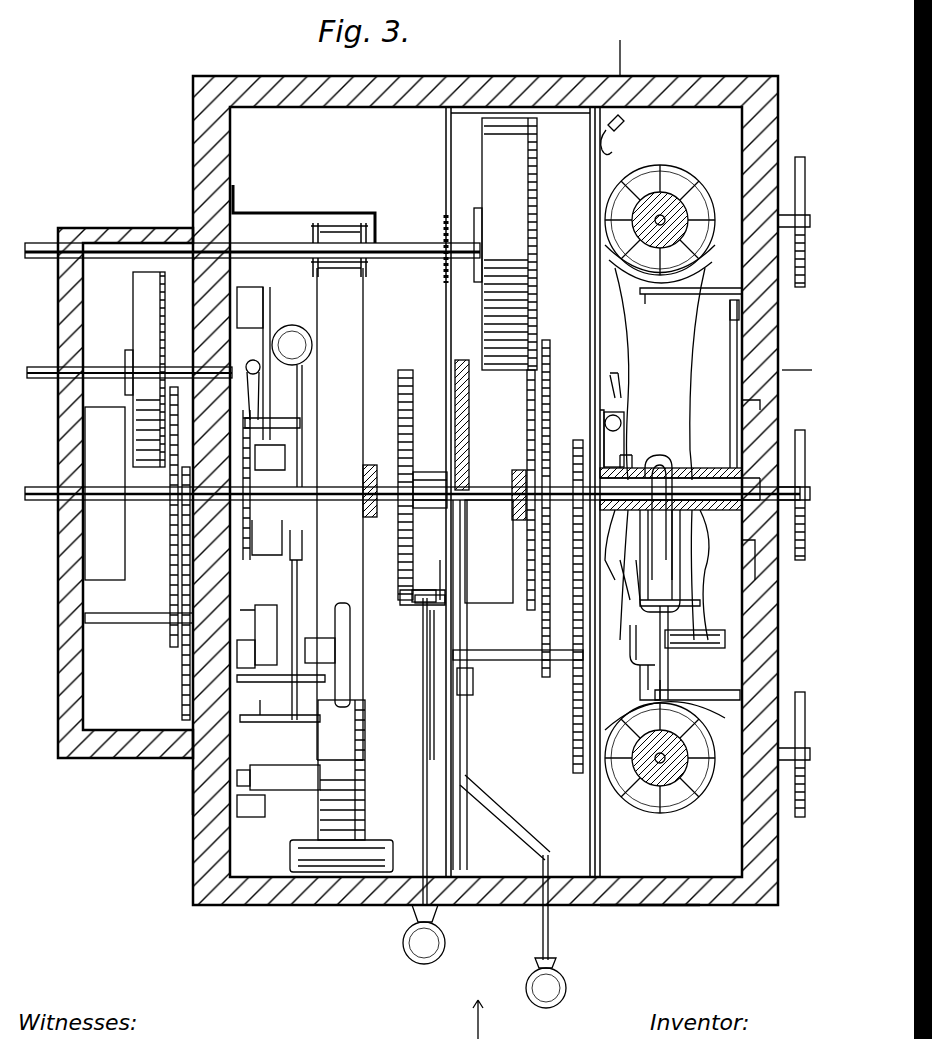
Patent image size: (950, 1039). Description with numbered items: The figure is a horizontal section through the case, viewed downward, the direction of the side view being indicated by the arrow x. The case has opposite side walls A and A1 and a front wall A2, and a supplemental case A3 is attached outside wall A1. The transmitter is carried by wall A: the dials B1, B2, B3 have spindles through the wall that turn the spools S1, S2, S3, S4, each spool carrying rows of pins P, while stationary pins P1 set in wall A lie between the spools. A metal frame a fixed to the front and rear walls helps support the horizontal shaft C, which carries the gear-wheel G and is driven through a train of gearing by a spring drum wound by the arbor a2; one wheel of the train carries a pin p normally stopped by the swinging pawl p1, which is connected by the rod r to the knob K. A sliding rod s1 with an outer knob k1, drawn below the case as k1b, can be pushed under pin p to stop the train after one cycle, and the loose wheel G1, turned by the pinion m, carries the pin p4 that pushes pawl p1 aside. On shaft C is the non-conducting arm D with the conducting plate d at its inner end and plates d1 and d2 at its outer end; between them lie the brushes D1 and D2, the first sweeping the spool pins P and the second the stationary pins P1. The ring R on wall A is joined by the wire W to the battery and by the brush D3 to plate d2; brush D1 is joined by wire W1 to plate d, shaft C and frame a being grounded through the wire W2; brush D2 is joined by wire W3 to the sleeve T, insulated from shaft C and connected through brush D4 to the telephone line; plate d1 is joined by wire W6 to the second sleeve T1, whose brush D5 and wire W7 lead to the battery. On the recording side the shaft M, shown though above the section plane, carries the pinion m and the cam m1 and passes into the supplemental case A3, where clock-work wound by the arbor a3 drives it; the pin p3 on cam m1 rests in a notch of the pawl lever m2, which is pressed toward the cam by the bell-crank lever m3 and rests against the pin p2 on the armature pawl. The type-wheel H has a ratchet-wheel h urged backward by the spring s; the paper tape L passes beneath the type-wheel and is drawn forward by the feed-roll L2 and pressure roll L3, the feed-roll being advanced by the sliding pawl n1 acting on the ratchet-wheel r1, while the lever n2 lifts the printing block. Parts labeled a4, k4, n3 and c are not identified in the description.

The side wall A is at (762, 824).
The side wall A1 is at (205, 782).
The front wall A2 is at (661, 905).
The supplemental case A3 is at (80, 632).
The metal frame a is at (446, 328).
The arbor a2 is at (48, 243).
The arbor a3 is at (46, 378).
The drum gear a4 is at (495, 190).
The shaft M is at (55, 492).
The gear train k4 is at (258, 580).
The paper-tape L is at (365, 350).
The feed-roll L2 is at (368, 790).
The pressure roll L3 is at (375, 850).
The pinion m is at (425, 478).
The cam m1 is at (265, 445).
The pawl lever m2 is at (305, 390).
The bell-crank lever m3 is at (282, 330).
The pin p is at (420, 606).
The swinging pawl p1 is at (436, 594).
The pin p2 is at (252, 440).
The pin p3 is at (280, 420).
The pin p4 is at (440, 560).
The knob k1 is at (290, 460).
The sliding pawl n1 is at (258, 805).
The lever n2 is at (282, 480).
The bracket n3 is at (305, 545).
The ratchet-wheel h is at (300, 600).
The spring s is at (258, 620).
The sliding rod s1 is at (468, 714).
The type-wheel H is at (352, 635).
The gear-wheel G is at (552, 430).
The loose wheel G1 is at (400, 560).
The horizontal shaft C is at (576, 440).
The plate c is at (482, 520).
The knob K is at (420, 955).
The knob k1b is at (540, 1000).
The rod r is at (428, 735).
The ratchet-wheel r1 is at (262, 776).
The spool S1 is at (698, 798).
The spool S2 is at (690, 598).
The spool S3 is at (692, 336).
The spool S4 is at (700, 185).
The pins P is at (645, 175).
The stationary pins P1 is at (698, 292).
The wire W is at (740, 318).
The wire W1 is at (622, 585).
The ground wire W2 is at (621, 95).
The wire W3 is at (708, 565).
The wire W6 is at (617, 548).
The wire W7 is at (622, 388).
The sleeve T is at (700, 468).
The second sleeve T1 is at (628, 460).
The plate d is at (666, 462).
The plate d1 is at (697, 653).
The plate d2 is at (630, 640).
The rotating arm D is at (665, 535).
The brush D1 is at (655, 610).
The brush D2 is at (640, 678).
The brush D3 is at (695, 639).
The brush D4 is at (742, 560).
The brush D5 is at (630, 434).
The ring R is at (742, 405).
The arrow x is at (782, 370).
The dial B1 is at (805, 716).
The dial B2 is at (805, 442).
The dial B3 is at (805, 178).